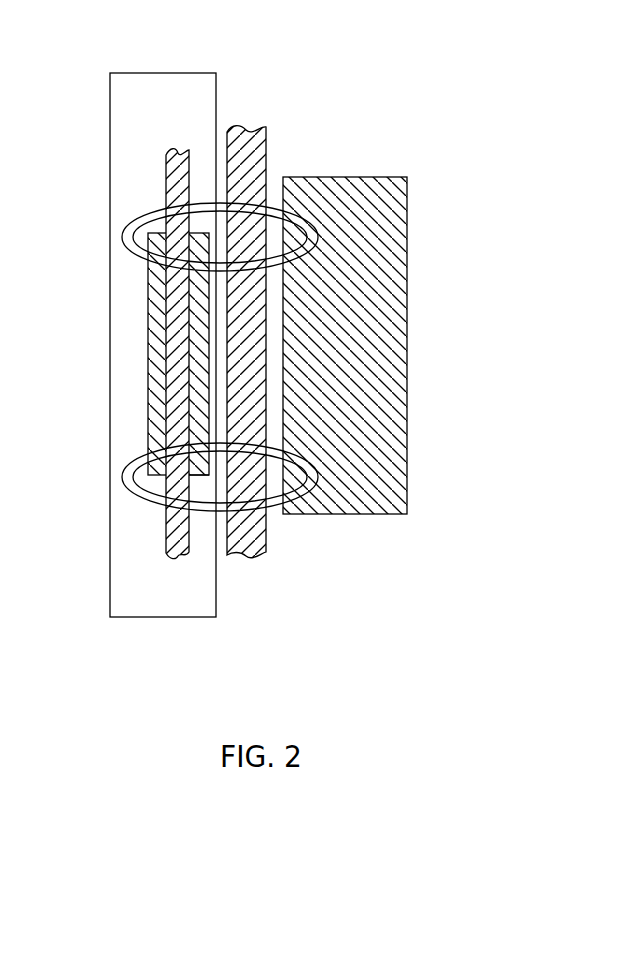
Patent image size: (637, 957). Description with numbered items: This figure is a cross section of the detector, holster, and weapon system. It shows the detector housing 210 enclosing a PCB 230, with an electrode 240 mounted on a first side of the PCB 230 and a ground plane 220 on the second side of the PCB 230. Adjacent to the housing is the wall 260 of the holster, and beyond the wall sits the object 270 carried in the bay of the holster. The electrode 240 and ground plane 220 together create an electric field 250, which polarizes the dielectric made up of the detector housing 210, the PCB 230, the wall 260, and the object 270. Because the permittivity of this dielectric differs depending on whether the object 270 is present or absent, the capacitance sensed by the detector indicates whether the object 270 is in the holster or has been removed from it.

The detector housing 210 is at (133, 73).
The ground plane 220 is at (148, 348).
The PCB 230 is at (167, 535).
The electrode 240 is at (197, 475).
The electric field 250 is at (279, 210).
The wall 260 is at (264, 125).
The object 270 is at (408, 203).